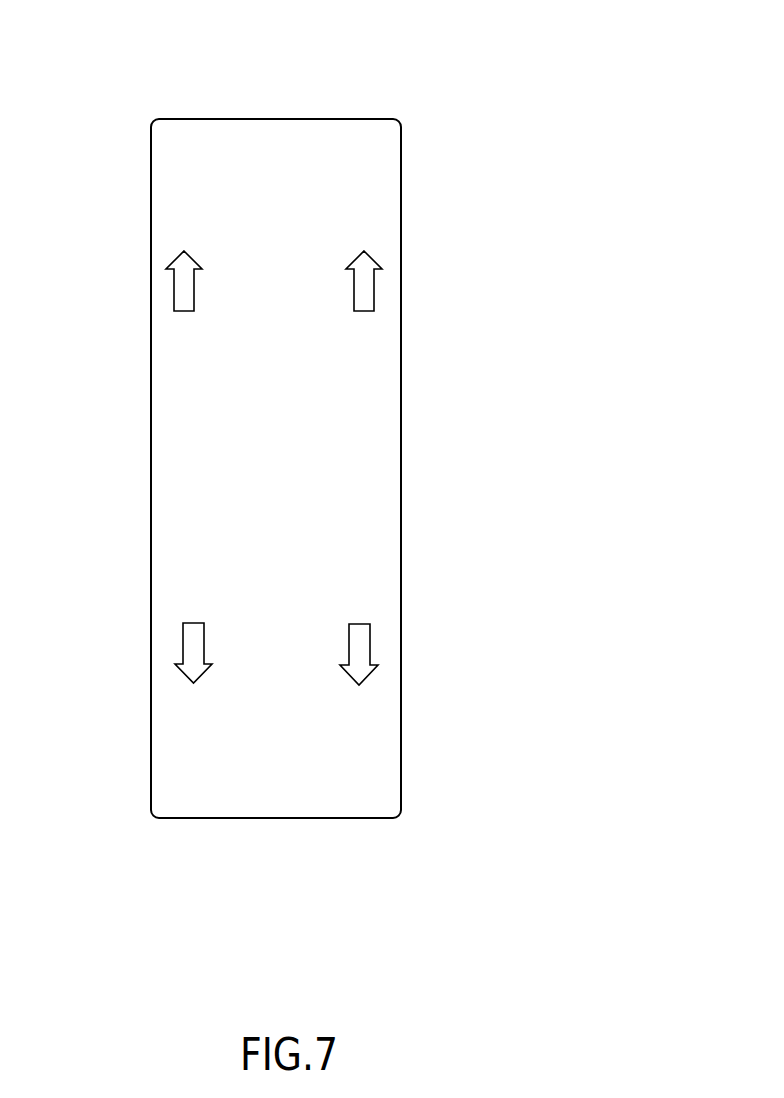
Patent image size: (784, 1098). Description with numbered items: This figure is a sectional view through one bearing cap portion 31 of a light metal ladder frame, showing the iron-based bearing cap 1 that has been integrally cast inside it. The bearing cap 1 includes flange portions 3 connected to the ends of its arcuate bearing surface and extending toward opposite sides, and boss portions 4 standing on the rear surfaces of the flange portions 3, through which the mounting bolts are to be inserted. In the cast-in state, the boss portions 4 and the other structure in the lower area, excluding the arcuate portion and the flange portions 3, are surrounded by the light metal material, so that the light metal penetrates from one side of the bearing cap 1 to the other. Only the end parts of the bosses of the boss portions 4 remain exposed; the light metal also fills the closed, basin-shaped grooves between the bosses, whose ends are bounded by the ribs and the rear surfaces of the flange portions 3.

The bearing cap 1 is at (388, 103).
The bearing cap portion 31 is at (133, 99).
The flange portion 3 is at (347, 190).
The boss portion 4 is at (263, 821).